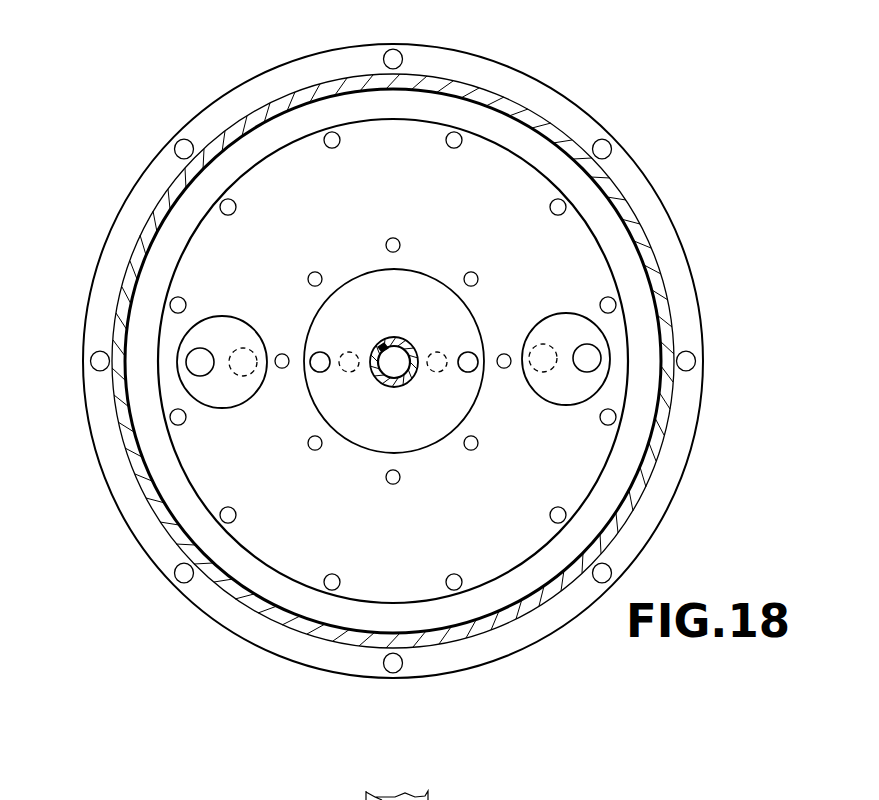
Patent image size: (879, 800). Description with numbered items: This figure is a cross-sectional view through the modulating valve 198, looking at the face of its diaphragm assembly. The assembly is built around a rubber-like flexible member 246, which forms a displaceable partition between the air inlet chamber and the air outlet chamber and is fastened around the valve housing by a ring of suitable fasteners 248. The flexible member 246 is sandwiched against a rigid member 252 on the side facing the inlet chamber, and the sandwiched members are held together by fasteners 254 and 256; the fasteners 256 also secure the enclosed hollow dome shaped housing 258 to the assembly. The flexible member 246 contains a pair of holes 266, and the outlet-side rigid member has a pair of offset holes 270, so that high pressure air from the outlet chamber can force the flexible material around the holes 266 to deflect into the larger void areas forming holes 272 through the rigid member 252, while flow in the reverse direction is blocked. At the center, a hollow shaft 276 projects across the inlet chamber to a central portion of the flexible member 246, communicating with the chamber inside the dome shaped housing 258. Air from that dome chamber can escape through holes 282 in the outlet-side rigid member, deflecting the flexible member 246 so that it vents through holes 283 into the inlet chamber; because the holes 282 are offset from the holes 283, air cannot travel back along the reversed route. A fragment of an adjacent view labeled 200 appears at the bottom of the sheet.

The modulating valve 198 is at (104, 230).
The adjacent figure fragment 200 is at (430, 790).
The flexible member 246 is at (221, 318).
The fasteners 248 is at (178, 580).
The rigid member 252 is at (267, 178).
The fasteners 254 is at (333, 131).
The fasteners 256 is at (478, 277).
The dome shaped housing 258 is at (395, 360).
The holes 266 is at (201, 377).
The holes 270 is at (246, 347).
The holes 272 is at (237, 404).
The hollow shaft 276 is at (394, 339).
The holes 282 is at (349, 350).
The holes 283 is at (321, 371).